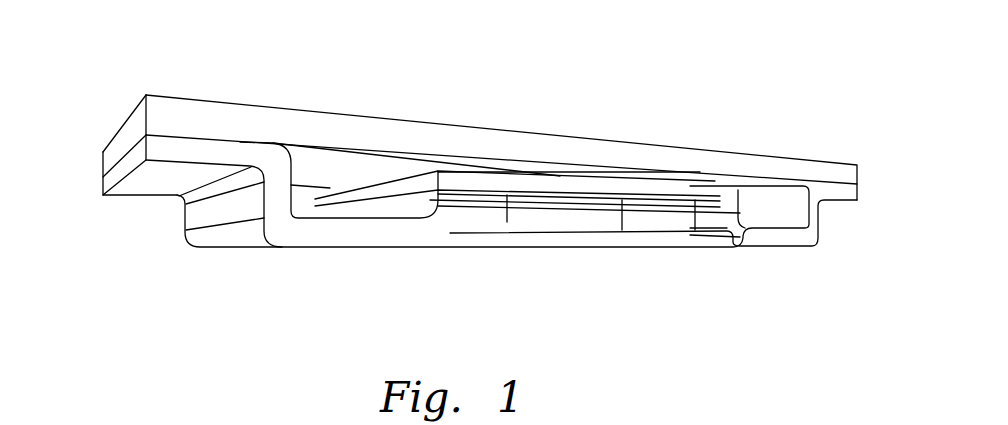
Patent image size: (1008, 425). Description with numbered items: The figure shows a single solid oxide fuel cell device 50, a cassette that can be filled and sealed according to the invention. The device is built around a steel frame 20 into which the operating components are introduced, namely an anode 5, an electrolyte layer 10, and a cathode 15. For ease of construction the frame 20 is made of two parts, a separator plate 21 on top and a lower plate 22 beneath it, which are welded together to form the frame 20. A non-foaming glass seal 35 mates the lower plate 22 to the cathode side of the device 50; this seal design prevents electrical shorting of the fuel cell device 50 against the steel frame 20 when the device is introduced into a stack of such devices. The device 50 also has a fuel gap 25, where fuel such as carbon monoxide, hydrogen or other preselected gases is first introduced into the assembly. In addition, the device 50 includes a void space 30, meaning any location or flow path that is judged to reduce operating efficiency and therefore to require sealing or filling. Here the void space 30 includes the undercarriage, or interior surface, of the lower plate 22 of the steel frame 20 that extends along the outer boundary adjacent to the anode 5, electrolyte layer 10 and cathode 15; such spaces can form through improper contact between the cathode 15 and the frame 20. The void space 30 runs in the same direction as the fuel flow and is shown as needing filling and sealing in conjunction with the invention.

The solid oxide fuel cell device 50 is at (531, 90).
The frame 20 is at (101, 150).
The separator plate 21 is at (128, 133).
The lower plate 22 is at (142, 185).
The void space 30 is at (318, 209).
The electrolyte layer 10 is at (443, 190).
The glass seal 35 is at (475, 198).
The cathode 15 is at (547, 206).
The fuel gap 25 is at (625, 182).
The anode 5 is at (713, 195).